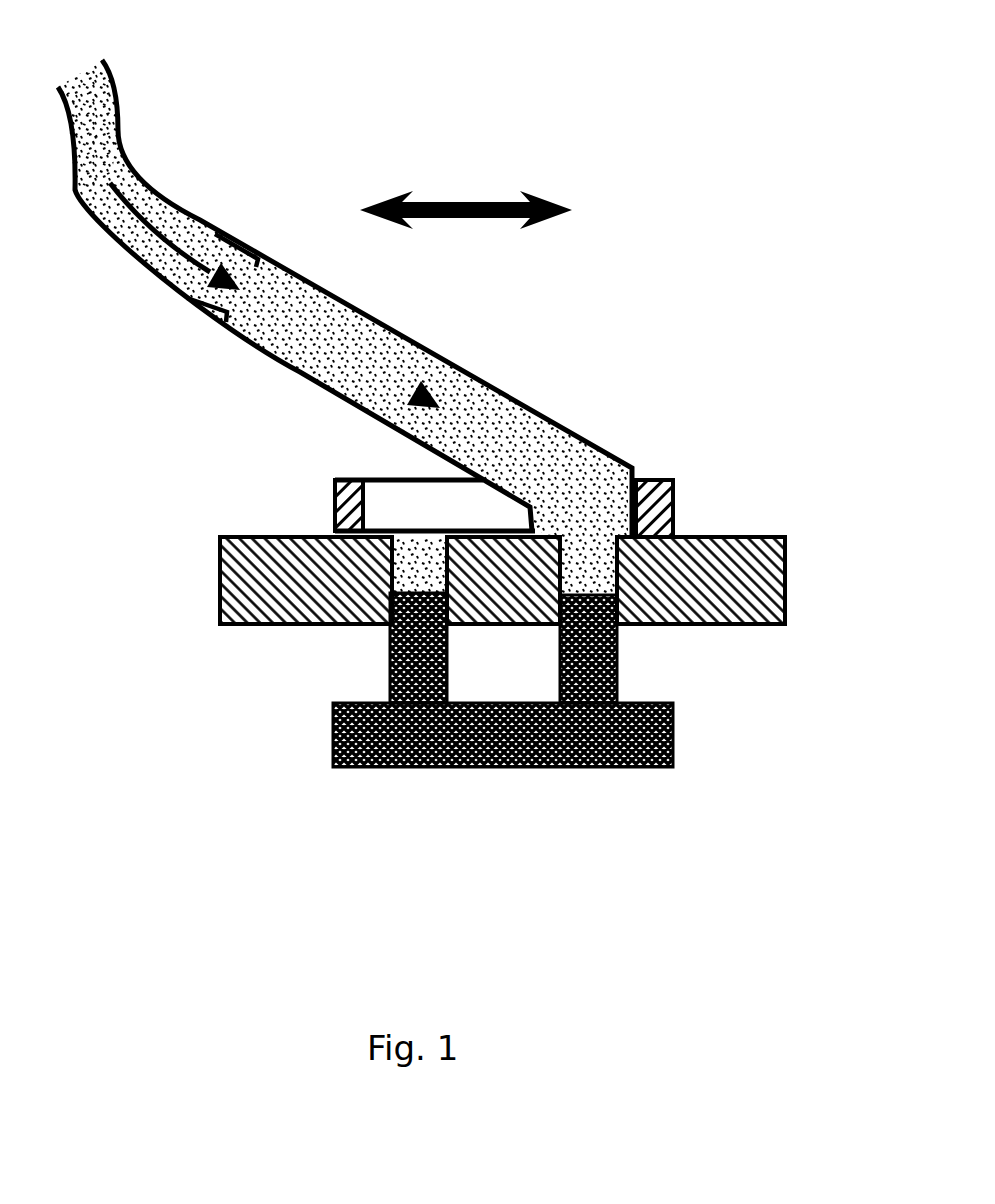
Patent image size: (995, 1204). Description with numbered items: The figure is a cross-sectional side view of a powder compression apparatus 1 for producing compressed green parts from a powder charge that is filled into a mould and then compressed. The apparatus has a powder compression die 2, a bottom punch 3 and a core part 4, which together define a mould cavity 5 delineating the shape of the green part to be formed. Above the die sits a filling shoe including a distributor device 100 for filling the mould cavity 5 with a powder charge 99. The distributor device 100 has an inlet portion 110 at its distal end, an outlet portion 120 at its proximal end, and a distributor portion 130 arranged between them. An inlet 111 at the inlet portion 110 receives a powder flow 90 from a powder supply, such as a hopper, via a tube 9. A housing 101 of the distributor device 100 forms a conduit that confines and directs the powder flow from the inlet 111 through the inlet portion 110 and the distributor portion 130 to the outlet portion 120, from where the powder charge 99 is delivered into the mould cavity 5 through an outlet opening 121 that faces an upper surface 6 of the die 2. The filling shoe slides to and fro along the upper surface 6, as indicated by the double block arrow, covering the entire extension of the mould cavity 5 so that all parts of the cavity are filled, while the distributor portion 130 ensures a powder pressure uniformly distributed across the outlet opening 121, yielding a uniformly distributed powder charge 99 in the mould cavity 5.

The powder compression apparatus 1 is at (563, 76).
The powder compression die 2 is at (232, 580).
The bottom punch 3 is at (407, 746).
The core part 4 is at (505, 580).
The mould cavity 5 is at (400, 573).
The upper surface 6 is at (298, 533).
The tube 9 is at (107, 137).
The powder flow 90 is at (147, 237).
The powder charge 99 is at (613, 583).
The distributor device 100 is at (467, 407).
The housing 101 is at (283, 257).
The inlet portion 110 is at (253, 290).
The inlet 111 is at (203, 308).
The outlet portion 120 is at (600, 503).
The outlet opening 121 is at (600, 528).
The distributor portion 130 is at (387, 377).